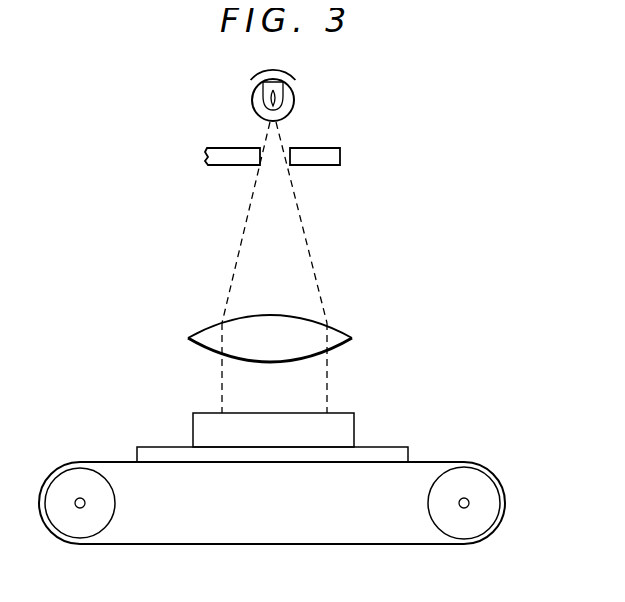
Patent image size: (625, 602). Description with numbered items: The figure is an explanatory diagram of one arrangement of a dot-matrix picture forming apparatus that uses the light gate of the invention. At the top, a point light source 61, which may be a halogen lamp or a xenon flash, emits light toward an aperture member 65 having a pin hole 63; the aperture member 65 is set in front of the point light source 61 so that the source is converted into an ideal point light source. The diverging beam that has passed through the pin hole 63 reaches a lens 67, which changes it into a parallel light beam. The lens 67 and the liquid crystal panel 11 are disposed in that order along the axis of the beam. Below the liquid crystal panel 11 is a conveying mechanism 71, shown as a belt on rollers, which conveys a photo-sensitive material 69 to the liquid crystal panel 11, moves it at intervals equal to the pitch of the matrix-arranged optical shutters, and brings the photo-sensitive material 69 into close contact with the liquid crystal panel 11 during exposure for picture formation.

The liquid crystal panel 11 is at (329, 417).
The point light source 61 is at (282, 87).
The pin hole 63 is at (270, 139).
The aperture member 65 is at (325, 147).
The lens 67 is at (332, 329).
The photo-sensitive material 69 is at (402, 447).
The conveying mechanism 71 is at (475, 504).